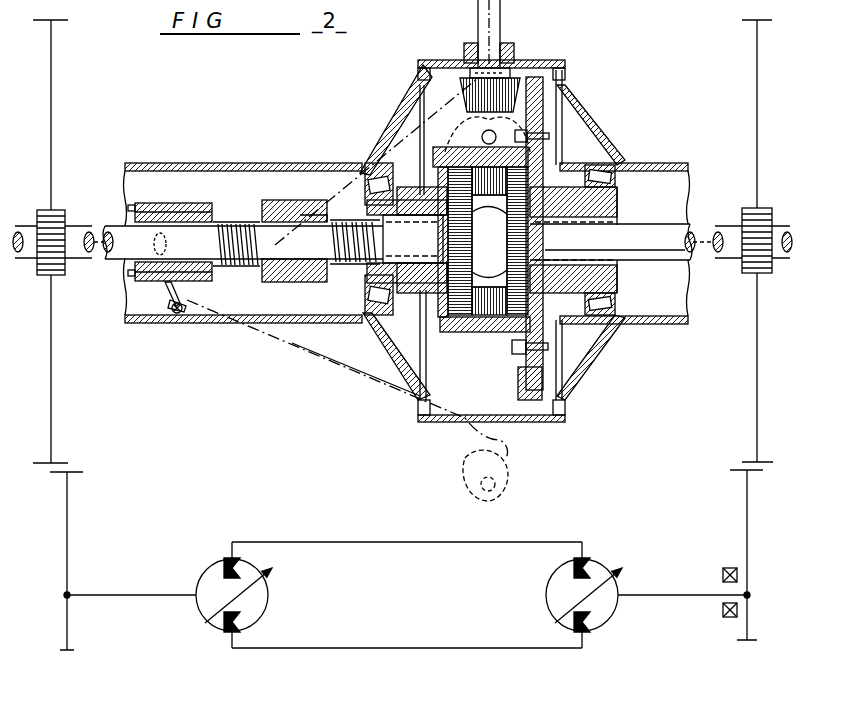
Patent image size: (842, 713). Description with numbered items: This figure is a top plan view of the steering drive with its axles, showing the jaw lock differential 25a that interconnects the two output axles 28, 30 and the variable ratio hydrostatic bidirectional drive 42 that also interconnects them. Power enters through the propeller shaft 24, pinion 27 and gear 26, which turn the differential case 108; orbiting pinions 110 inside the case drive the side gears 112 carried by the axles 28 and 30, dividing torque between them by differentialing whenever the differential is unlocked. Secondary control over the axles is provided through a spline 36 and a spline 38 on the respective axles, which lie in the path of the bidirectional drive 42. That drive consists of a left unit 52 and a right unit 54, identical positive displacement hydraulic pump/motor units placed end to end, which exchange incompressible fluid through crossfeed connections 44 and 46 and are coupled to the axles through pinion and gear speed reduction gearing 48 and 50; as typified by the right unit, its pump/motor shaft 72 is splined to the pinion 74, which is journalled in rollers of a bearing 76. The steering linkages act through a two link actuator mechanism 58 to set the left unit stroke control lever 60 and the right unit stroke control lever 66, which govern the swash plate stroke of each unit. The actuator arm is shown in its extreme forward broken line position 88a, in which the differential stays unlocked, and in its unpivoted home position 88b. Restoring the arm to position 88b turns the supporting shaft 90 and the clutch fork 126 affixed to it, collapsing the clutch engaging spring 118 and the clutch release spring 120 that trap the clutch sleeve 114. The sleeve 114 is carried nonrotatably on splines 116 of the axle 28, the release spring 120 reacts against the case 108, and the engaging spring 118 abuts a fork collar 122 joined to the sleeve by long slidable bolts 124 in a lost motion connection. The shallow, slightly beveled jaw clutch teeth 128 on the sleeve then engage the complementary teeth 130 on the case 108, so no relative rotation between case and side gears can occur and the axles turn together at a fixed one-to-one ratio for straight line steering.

The propeller shaft 24 is at (477, 12).
The jaw lock differential 25a is at (392, 96).
The gear 26 is at (544, 102).
The pinion 27 is at (502, 78).
The output axle 28 is at (123, 249).
The output axle 30 is at (733, 255).
The spline 36 is at (66, 220).
The spline 38 is at (742, 222).
The bidirectional drive 42 is at (222, 543).
The crossfeed connection 44 is at (300, 542).
The crossfeed connection 46 is at (346, 648).
The pinion and gear speed reduction gearing 48 is at (740, 462).
The pinion and gear speed reduction gearing 50 is at (82, 468).
The left unit 52 is at (270, 602).
The right unit 54 is at (553, 571).
The two link actuator mechanism 58 is at (458, 472).
The left unit stroke control lever 60 is at (202, 620).
The right unit stroke control lever 66 is at (545, 606).
The pump/motor shaft 72 is at (670, 594).
The pinion 74 is at (747, 522).
The bearing 76 is at (722, 612).
The extreme forward position of actuator arm 88a is at (282, 156).
The unpivoted position of actuator arm 88b is at (262, 373).
The supporting shaft 90 is at (174, 314).
The differential case 108 is at (410, 292).
The orbiting pinion 110 is at (516, 264).
The side gear 112 is at (540, 178).
The clutch sleeve 114 is at (275, 264).
The spline 116 is at (280, 282).
The clutch engaging spring 118 is at (222, 224).
The clutch release spring 120 is at (385, 242).
The fork collar 122 is at (140, 218).
The bolt 124 is at (157, 278).
The clutch fork 126 is at (165, 318).
The jaw clutch teeth 128 is at (315, 292).
The jaw clutch teeth 130 is at (363, 266).